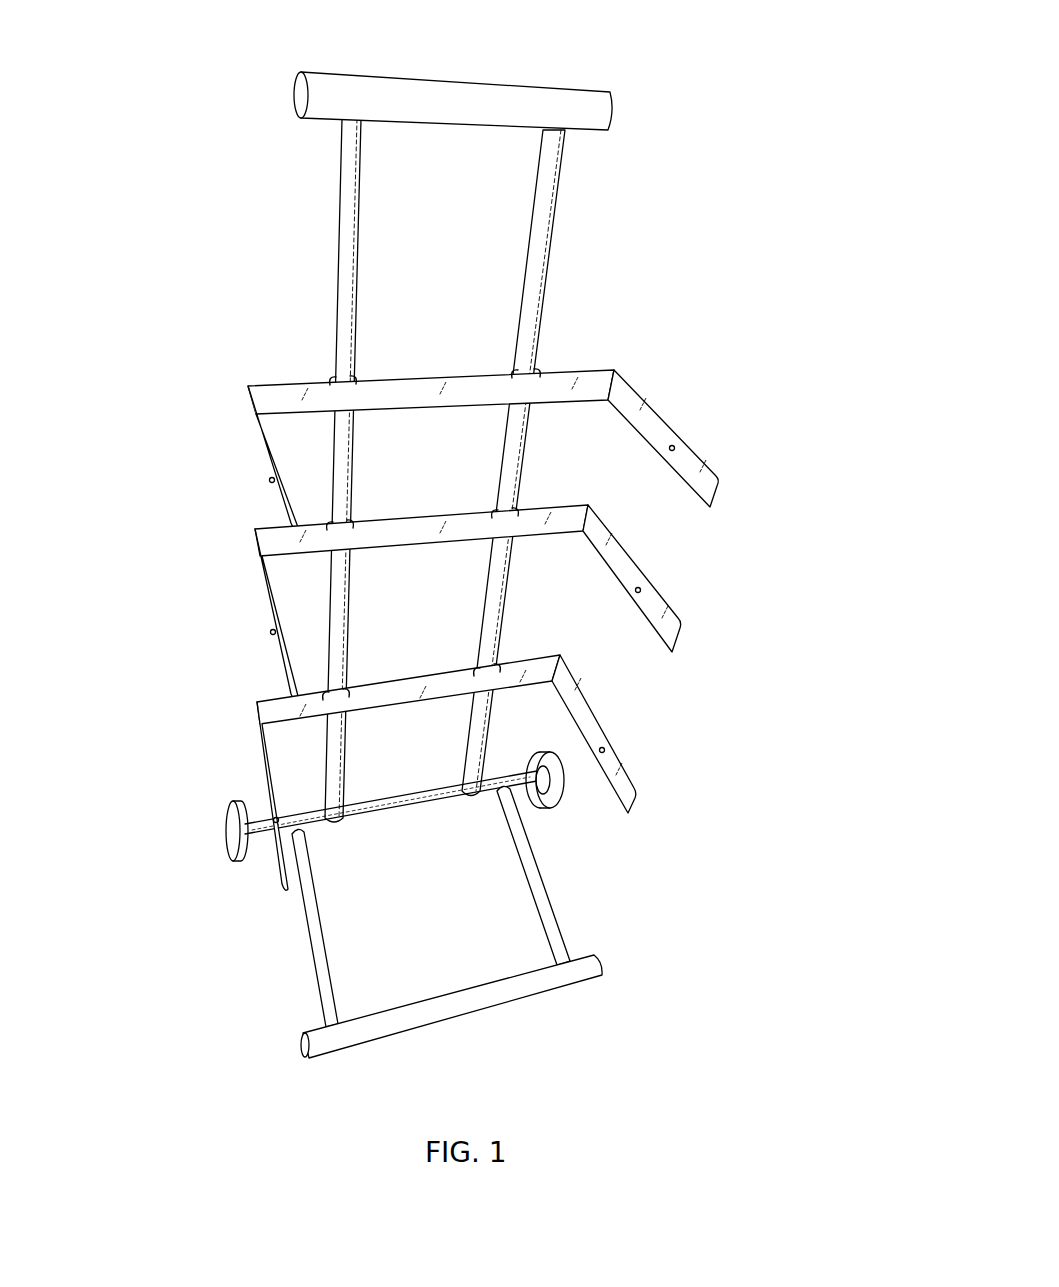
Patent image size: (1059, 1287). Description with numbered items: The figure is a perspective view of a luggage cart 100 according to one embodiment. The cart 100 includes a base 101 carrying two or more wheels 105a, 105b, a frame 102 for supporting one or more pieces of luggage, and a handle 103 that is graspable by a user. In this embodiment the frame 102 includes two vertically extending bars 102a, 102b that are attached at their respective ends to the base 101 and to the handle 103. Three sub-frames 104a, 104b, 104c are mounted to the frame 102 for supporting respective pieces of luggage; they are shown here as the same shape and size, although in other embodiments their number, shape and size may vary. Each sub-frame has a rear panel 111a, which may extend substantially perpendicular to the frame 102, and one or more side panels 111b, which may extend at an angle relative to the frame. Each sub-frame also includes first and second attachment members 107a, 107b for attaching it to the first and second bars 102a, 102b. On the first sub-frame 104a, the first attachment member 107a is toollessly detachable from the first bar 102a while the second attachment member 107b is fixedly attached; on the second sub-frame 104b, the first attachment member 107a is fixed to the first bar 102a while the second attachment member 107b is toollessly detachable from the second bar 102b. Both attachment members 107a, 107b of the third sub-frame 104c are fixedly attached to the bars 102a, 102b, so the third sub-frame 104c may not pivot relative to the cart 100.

The luggage cart 100 is at (660, 73).
The base 101 is at (320, 955).
The frame 102 is at (455, 470).
The first bar 102a is at (343, 238).
The second bar 102b is at (548, 232).
The handle 103 is at (295, 96).
The first sub-frame 104a is at (472, 469).
The second sub-frame 104b is at (247, 560).
The third sub-frame 104c is at (265, 708).
The wheel 105a is at (235, 827).
The wheel 105b is at (567, 805).
The first attachment member 107a is at (333, 375).
The second attachment member 107b is at (567, 373).
The rear panel 111a is at (525, 396).
The side panel 111b is at (703, 477).